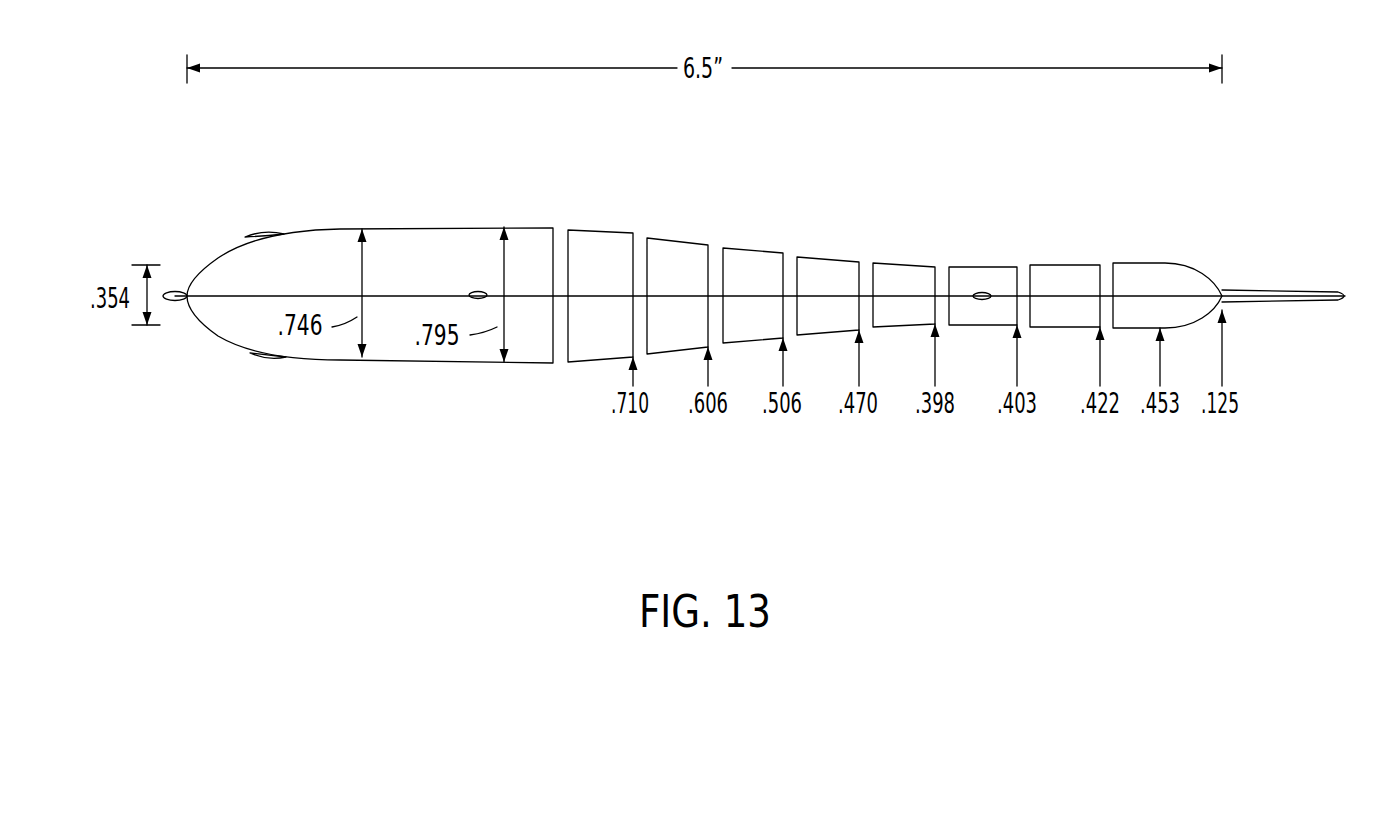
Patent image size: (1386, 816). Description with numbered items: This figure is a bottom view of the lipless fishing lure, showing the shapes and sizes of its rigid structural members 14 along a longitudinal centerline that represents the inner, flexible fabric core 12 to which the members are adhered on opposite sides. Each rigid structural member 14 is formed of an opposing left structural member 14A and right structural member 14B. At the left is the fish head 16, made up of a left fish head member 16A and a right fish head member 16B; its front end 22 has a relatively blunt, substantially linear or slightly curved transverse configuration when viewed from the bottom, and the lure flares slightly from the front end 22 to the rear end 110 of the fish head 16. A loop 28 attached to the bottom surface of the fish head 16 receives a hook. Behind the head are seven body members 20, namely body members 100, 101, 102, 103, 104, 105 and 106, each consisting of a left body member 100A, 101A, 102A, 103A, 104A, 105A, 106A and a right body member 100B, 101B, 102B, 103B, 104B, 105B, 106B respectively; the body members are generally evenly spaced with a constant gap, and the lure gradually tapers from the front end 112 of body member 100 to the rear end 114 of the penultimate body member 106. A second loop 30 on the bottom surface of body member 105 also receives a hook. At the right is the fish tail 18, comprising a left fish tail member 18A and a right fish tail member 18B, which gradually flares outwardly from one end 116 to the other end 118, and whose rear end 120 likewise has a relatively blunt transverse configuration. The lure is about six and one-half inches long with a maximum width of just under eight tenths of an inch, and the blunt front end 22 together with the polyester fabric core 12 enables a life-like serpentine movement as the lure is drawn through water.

The fabric core 12 is at (555, 287).
The rigid structural members 14 is at (345, 345).
The left structural member 14A is at (240, 267).
The right structural member 14B is at (210, 320).
The fish head 16 is at (273, 335).
The left fish head member 16A is at (408, 252).
The right fish head member 16B is at (402, 345).
The fish tail 18 is at (1190, 283).
The left fish tail member 18A is at (1163, 280).
The right fish tail member 18B is at (1193, 313).
The body members 20 is at (583, 357).
The front end 22 is at (187, 317).
The loop 28 is at (478, 287).
The loop 30 is at (982, 300).
The body member 100 is at (590, 255).
The left body member 100A is at (613, 255).
The right body member 100B is at (615, 345).
The body member 101 is at (695, 255).
The left body member 101A is at (683, 253).
The right body member 101B is at (680, 360).
The body member 102 is at (735, 272).
The left body member 102A is at (762, 267).
The right body member 102B is at (767, 320).
The body member 103 is at (817, 278).
The left body member 103A is at (842, 278).
The right body member 103B is at (817, 327).
The body member 104 is at (893, 280).
The left body member 104A is at (908, 280).
The right body member 104B is at (908, 313).
The body member 105 is at (995, 278).
The left body member 105A is at (973, 280).
The right body member 105B is at (965, 313).
The body member 106 is at (1057, 278).
The left body member 106A is at (1073, 278).
The right body member 106B is at (1055, 307).
The rear end of the fish head 110 is at (553, 363).
The front end of the body member 112 is at (572, 357).
The rear end of the penultimate body member 114 is at (1103, 327).
The end of the fish tail 116 is at (1113, 265).
The other end of the fish tail 118 is at (1223, 305).
The rear end of the fish tail 120 is at (1225, 290).